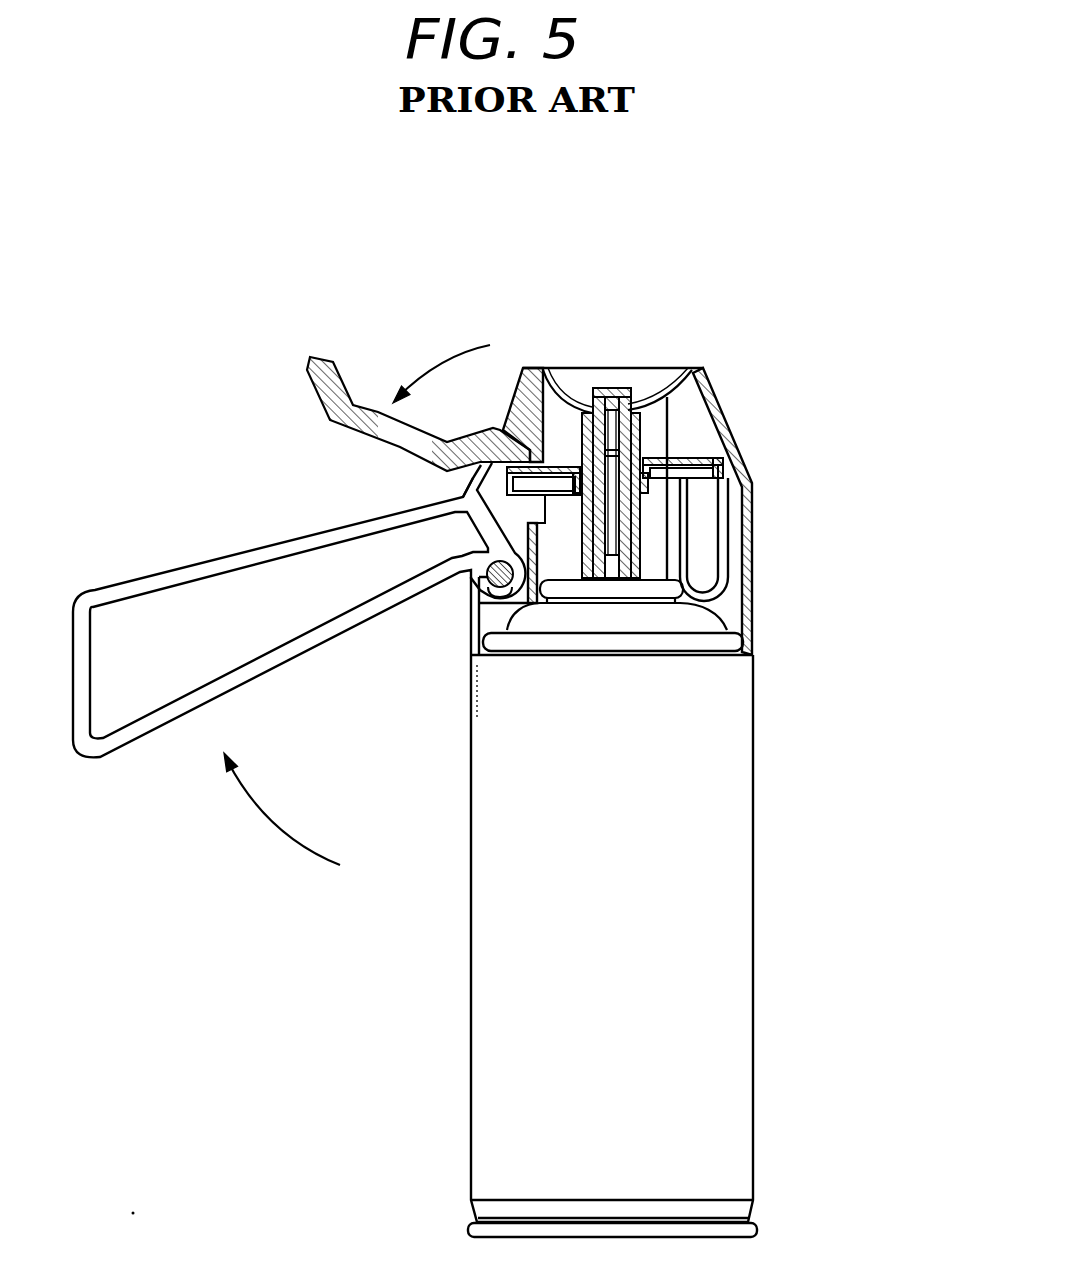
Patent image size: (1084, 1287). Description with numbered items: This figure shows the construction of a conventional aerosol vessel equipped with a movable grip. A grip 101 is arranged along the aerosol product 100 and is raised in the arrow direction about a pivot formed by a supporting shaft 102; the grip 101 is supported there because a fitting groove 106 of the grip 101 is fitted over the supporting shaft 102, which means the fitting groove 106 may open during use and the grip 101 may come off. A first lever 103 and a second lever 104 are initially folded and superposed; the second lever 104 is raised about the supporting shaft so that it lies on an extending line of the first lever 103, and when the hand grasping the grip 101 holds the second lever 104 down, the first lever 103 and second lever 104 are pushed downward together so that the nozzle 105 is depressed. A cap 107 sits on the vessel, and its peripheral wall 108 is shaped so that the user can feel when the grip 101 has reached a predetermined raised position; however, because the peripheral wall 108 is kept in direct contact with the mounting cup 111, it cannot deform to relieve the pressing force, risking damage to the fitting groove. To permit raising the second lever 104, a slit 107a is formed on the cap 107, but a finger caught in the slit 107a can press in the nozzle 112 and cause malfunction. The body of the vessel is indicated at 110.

The aerosol product 100 is at (703, 946).
The grip 101 is at (297, 656).
The supporting shaft 102 is at (465, 590).
The first lever 103 is at (700, 450).
The second lever 104 is at (328, 399).
The nozzle 105 is at (668, 428).
The fitting groove 106 is at (498, 592).
The cap 107 is at (757, 555).
The slit 107a is at (570, 387).
The peripheral wall 108 is at (722, 690).
The can body 110 is at (724, 809).
The mounting cup 111 is at (497, 650).
The nozzle 112 is at (610, 382).